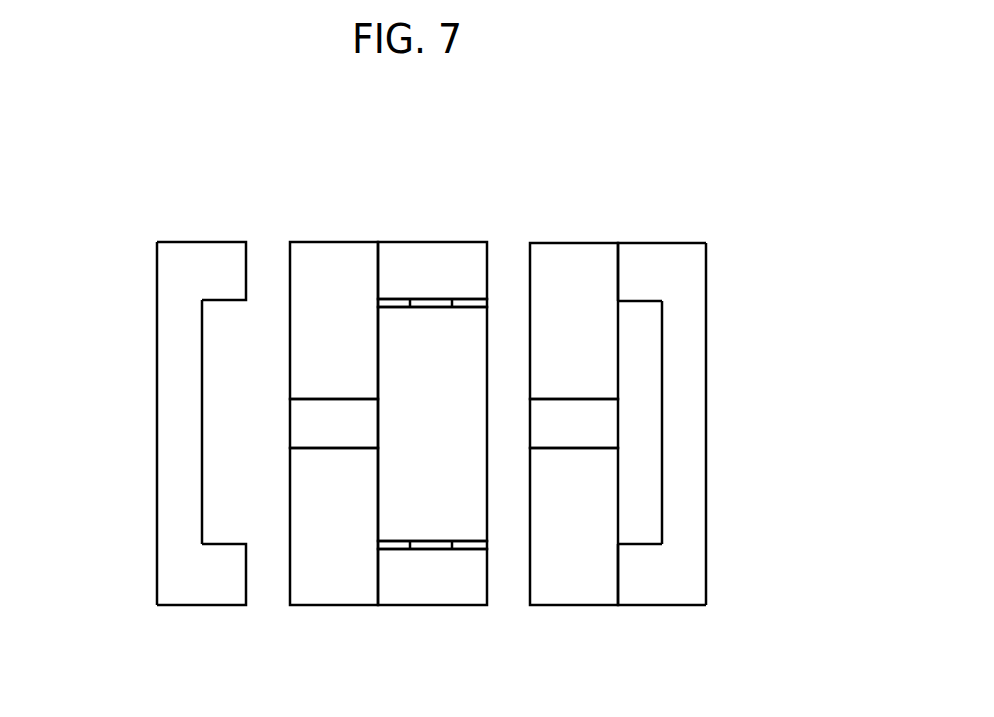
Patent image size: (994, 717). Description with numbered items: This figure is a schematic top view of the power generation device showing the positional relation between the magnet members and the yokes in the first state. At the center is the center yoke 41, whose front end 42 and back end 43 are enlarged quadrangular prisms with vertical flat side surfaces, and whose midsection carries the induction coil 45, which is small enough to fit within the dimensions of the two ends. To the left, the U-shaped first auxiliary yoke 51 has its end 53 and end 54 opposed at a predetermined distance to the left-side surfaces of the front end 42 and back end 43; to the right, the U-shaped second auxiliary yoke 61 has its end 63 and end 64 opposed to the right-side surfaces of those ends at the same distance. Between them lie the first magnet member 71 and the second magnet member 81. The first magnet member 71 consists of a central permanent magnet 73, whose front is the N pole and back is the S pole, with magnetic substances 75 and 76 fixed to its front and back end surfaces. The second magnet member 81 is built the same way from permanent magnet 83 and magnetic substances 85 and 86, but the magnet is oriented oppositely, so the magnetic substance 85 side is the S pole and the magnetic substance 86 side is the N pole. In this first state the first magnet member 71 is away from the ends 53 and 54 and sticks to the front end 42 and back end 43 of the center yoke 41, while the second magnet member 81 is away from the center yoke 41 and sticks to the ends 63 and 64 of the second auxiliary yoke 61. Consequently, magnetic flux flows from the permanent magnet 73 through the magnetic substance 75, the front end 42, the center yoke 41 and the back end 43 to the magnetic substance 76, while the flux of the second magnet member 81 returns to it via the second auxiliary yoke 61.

The center yoke 41 is at (442, 423).
The front end 42 is at (438, 277).
The back end 43 is at (428, 581).
The induction coil 45 is at (417, 390).
The first auxiliary yoke 51 is at (177, 303).
The end of first auxiliary yoke 53 is at (246, 272).
The end of first auxiliary yoke 54 is at (246, 575).
The second auxiliary yoke 61 is at (685, 299).
The end of second auxiliary yoke 63 is at (618, 266).
The end of second auxiliary yoke 64 is at (618, 572).
The first magnet member 71 is at (205, 423).
The permanent magnet 73 is at (308, 429).
The magnetic substance 75 is at (308, 368).
The magnetic substance 76 is at (308, 480).
The second magnet member 81 is at (680, 424).
The permanent magnet 83 is at (602, 422).
The magnetic substance 85 is at (602, 346).
The magnetic substance 86 is at (646, 526).